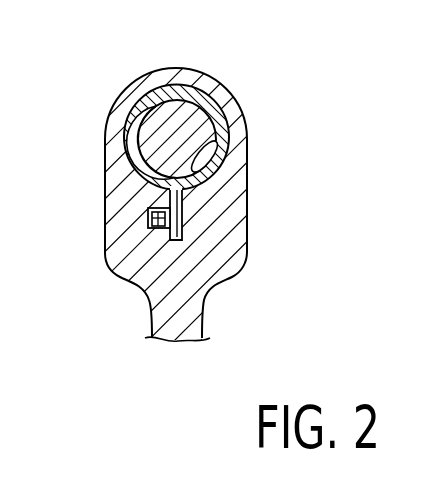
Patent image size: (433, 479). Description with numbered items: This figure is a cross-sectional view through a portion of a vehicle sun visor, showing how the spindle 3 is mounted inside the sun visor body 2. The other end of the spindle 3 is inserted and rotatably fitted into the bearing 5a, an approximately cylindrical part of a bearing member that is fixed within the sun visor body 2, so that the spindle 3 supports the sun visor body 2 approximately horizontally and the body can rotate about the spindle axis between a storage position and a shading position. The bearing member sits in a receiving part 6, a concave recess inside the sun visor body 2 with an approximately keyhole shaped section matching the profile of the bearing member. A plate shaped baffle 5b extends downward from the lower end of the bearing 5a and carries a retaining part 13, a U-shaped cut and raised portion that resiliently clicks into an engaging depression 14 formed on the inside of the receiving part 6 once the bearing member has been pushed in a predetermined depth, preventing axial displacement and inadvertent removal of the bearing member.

The sun visor body 2 is at (177, 313).
The spindle 3 is at (185, 123).
The bearing 5a is at (148, 100).
The baffle 5b is at (183, 228).
The receiving part 6 is at (212, 143).
The retaining part 13 is at (148, 225).
The engaging depression 14 is at (150, 210).